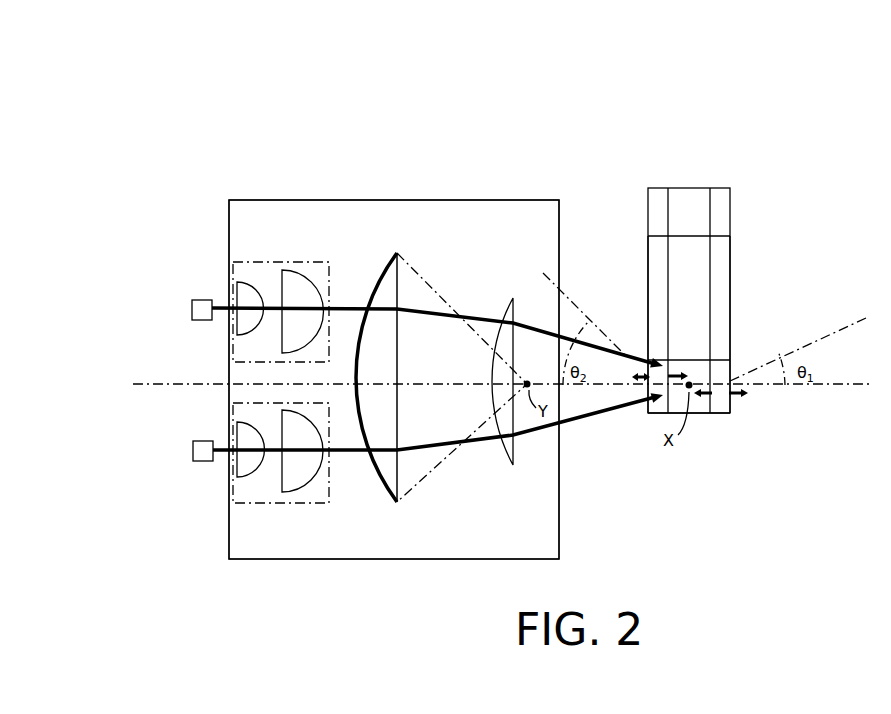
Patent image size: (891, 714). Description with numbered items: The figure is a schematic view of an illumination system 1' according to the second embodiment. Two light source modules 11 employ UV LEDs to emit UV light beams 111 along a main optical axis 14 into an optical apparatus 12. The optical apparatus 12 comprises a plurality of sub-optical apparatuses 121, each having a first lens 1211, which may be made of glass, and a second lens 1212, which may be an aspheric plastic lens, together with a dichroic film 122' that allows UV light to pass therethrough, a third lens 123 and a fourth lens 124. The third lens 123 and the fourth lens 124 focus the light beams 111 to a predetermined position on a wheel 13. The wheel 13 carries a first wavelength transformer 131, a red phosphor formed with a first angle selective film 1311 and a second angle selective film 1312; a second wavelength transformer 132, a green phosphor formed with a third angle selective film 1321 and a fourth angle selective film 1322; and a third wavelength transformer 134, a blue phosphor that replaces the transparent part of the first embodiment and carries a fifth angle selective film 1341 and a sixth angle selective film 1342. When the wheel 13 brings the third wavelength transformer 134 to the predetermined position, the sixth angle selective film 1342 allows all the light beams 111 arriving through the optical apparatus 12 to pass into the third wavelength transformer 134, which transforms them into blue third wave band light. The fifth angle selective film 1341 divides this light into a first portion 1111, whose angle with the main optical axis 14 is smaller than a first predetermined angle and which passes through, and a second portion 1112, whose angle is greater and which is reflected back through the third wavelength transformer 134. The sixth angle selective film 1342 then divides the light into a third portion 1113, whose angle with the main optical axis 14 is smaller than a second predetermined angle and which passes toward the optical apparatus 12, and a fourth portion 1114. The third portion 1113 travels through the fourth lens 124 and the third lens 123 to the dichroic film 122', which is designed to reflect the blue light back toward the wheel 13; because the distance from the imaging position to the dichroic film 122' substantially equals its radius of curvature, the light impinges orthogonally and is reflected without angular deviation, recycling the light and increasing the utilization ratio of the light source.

The illumination system 1' is at (394, 293).
The light source module 11 is at (204, 299).
The UV light beam 111 is at (220, 316).
The optical apparatus 12 is at (241, 199).
The sub-optical apparatus 121 is at (320, 262).
The first lens 1211 is at (245, 290).
The second lens 1212 is at (292, 282).
The dichroic film 122' is at (404, 357).
The third lens 123 is at (385, 370).
The fourth lens 124 is at (505, 452).
The wheel 13 is at (680, 182).
The first wavelength transformer 131 is at (698, 195).
The first angle selective film 1311 is at (722, 195).
The second angle selective film 1312 is at (655, 195).
The second wavelength transformer 132 is at (690, 282).
The third angle selective film 1321 is at (722, 268).
The fourth angle selective film 1322 is at (658, 265).
The third wavelength transformer 134 is at (698, 405).
The fifth angle selective film 1341 is at (720, 407).
The sixth angle selective film 1342 is at (660, 413).
The first portion 1111 is at (746, 397).
The second portion 1112 is at (697, 390).
The third portion 1113 is at (652, 365).
The fourth portion 1114 is at (673, 365).
The main optical axis 14 is at (158, 383).